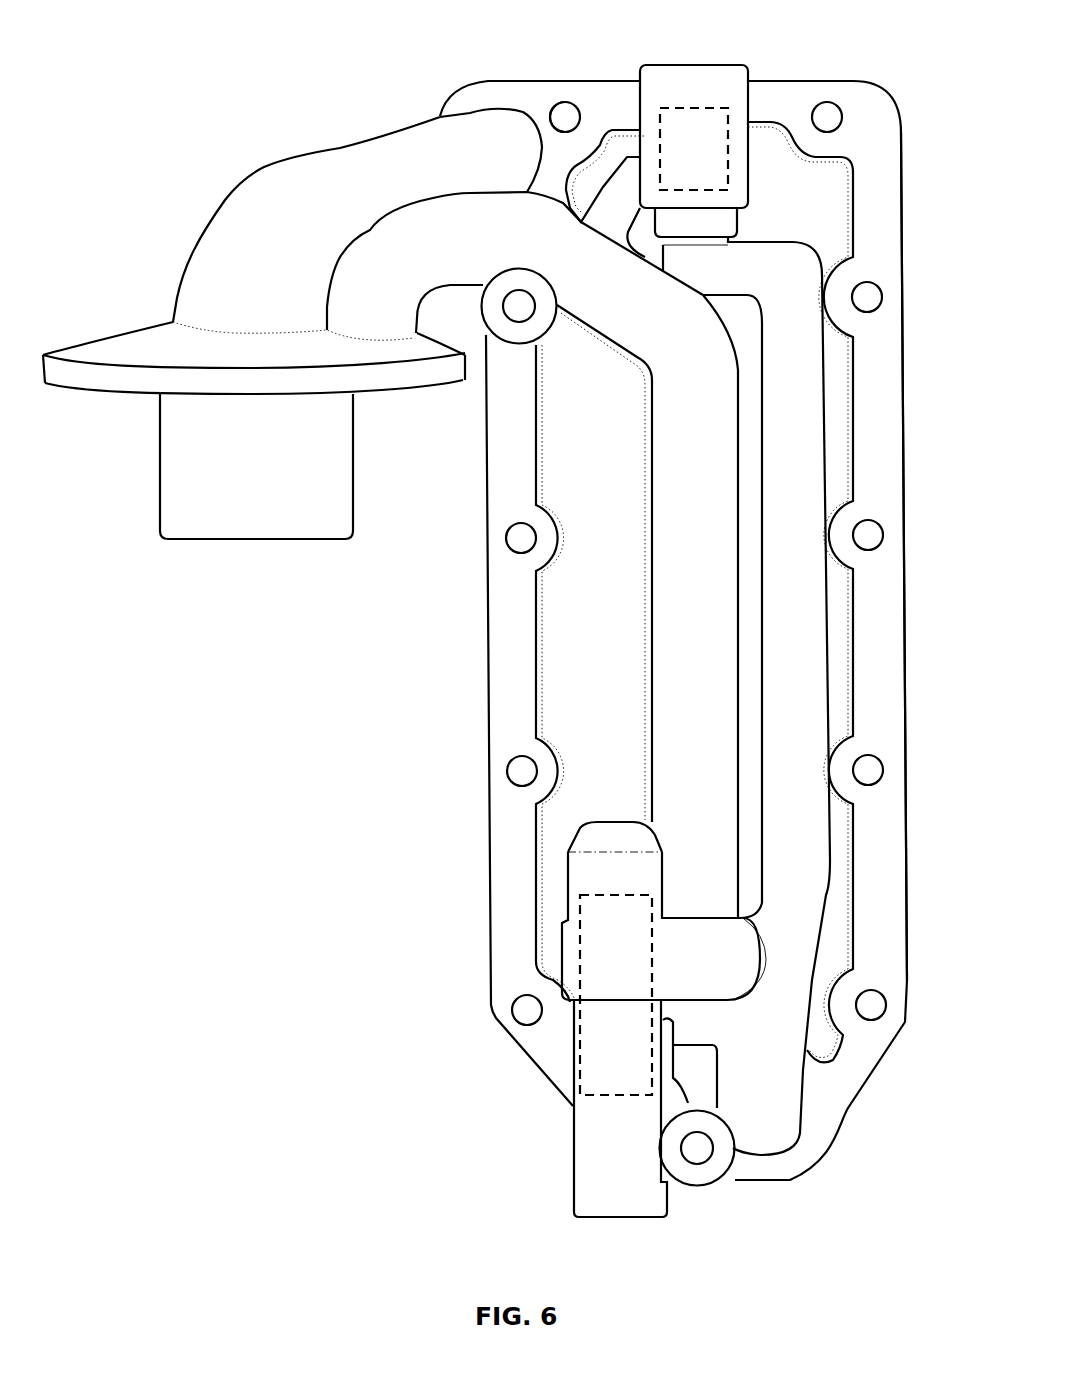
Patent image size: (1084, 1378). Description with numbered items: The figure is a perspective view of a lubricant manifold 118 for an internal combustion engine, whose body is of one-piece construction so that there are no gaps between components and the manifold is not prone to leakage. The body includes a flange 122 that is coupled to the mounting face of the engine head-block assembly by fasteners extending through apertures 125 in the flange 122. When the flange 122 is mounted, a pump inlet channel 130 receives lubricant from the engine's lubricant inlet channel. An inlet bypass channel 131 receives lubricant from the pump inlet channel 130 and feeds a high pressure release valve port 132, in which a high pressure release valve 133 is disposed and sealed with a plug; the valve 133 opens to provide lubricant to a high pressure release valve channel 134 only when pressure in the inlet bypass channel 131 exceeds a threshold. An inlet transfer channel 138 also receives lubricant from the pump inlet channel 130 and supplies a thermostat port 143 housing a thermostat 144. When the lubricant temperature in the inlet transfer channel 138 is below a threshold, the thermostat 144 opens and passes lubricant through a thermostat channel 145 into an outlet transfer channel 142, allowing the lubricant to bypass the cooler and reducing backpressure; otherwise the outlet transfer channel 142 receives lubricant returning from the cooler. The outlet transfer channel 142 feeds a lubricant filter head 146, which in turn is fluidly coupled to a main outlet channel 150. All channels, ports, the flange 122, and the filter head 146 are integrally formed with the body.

The lubricant manifold 118 is at (701, 593).
The flange 122 is at (883, 655).
The apertures 125 is at (885, 533).
The pump inlet channel 130 is at (773, 1107).
The inlet bypass channel 131 is at (693, 975).
The high pressure release valve port 132 is at (600, 1195).
The high pressure release valve 133 is at (580, 965).
The high pressure release valve channel 134 is at (588, 859).
The inlet transfer channel 138 is at (785, 770).
The outlet transfer channel 142 is at (680, 740).
The thermostat port 143 is at (737, 196).
The thermostat 144 is at (713, 107).
The thermostat channel 145 is at (606, 203).
The lubricant filter head 146 is at (312, 314).
The main outlet channel 150 is at (387, 165).